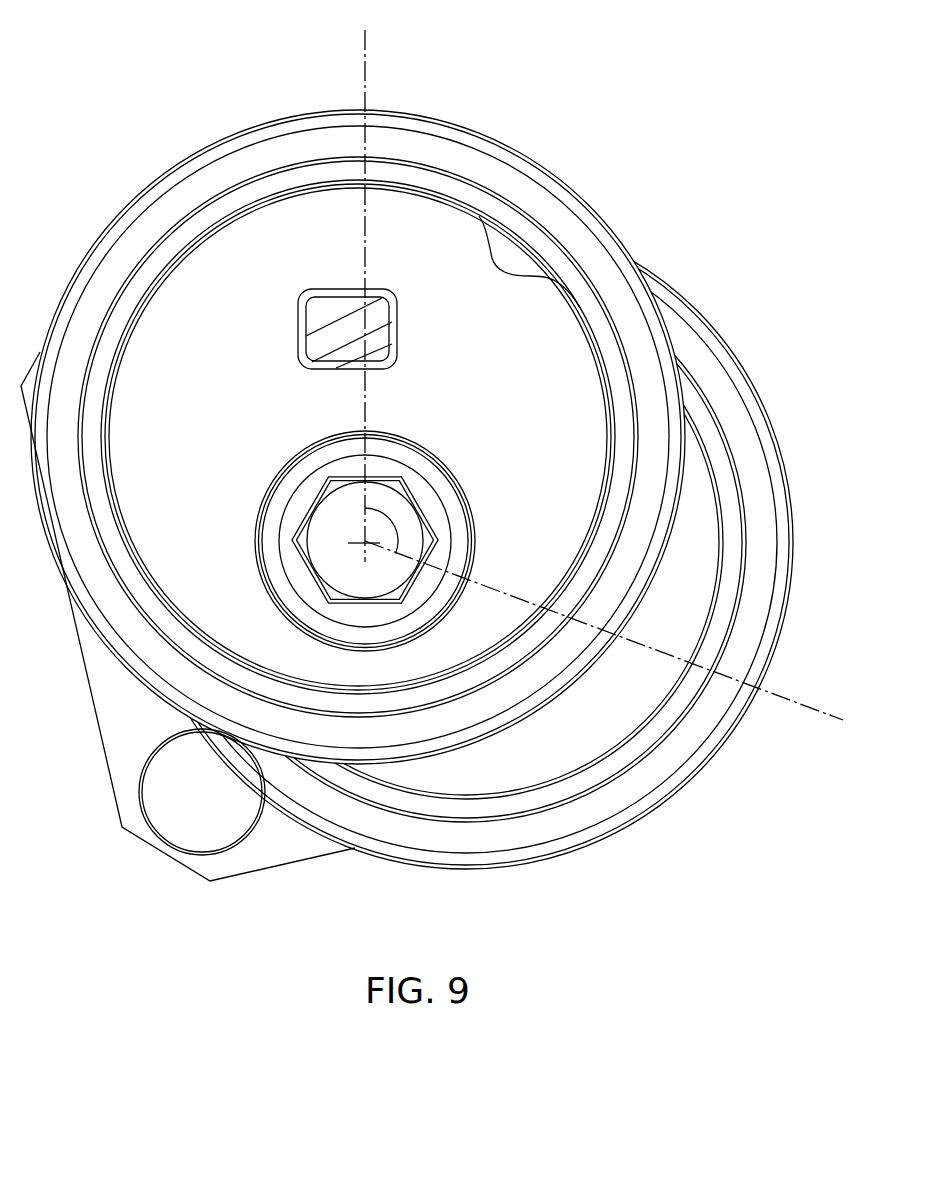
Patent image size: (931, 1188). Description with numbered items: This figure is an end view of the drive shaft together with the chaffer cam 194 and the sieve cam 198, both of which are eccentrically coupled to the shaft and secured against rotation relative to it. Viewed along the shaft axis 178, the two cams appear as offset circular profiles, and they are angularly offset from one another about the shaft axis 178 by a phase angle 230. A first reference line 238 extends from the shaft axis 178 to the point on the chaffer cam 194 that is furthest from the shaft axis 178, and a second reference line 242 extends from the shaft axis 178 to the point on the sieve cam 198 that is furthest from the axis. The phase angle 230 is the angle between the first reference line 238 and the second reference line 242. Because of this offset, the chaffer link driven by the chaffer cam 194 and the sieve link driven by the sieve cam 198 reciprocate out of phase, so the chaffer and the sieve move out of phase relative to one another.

The shaft axis 178 is at (357, 551).
The chaffer cam 194 is at (735, 572).
The sieve cam 198 is at (568, 342).
The phase angle 230 is at (396, 532).
The first reference line 238 is at (368, 86).
The second reference line 242 is at (793, 703).